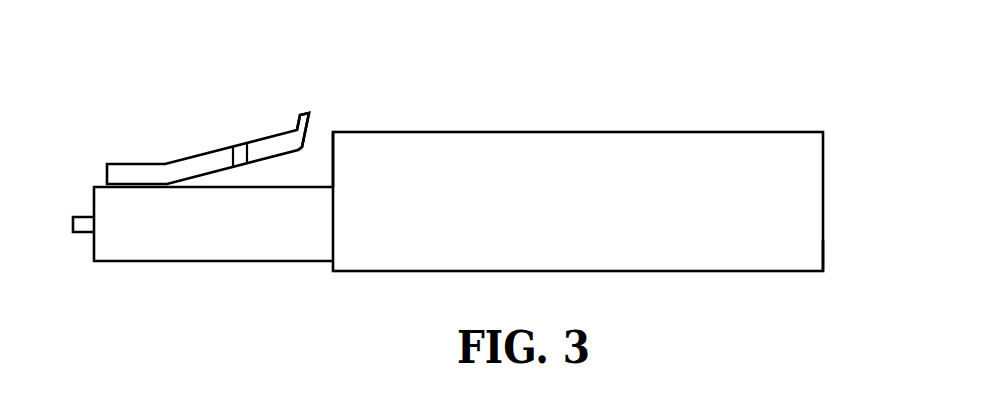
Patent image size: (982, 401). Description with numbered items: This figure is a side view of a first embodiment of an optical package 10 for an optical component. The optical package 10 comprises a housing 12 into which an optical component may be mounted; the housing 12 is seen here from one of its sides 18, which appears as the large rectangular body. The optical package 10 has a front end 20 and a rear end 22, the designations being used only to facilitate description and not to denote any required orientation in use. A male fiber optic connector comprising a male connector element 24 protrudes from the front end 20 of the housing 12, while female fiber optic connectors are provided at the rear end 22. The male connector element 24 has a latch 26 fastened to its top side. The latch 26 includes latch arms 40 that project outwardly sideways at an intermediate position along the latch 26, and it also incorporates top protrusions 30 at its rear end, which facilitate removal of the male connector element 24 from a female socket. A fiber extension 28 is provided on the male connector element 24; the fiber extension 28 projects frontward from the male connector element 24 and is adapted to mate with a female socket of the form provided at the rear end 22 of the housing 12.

The optical package 10 is at (633, 48).
The housing 12 is at (668, 130).
The sides 18 is at (506, 220).
The front end 20 is at (332, 140).
The rear end 22 is at (823, 252).
The male connector element 24 is at (247, 262).
The latch 26 is at (213, 148).
The fiber extension 28 is at (83, 213).
The top protrusion 30 is at (297, 122).
The latch arm 40 is at (242, 144).